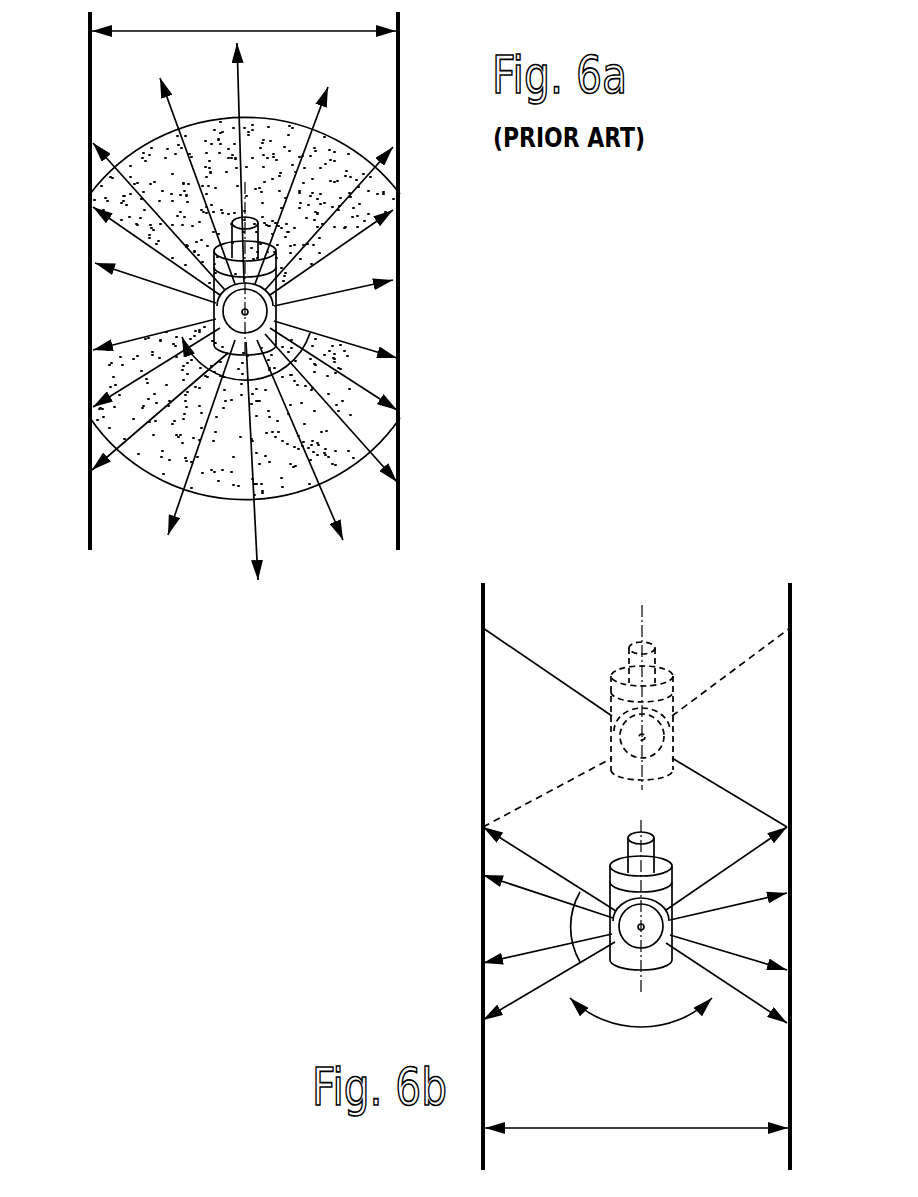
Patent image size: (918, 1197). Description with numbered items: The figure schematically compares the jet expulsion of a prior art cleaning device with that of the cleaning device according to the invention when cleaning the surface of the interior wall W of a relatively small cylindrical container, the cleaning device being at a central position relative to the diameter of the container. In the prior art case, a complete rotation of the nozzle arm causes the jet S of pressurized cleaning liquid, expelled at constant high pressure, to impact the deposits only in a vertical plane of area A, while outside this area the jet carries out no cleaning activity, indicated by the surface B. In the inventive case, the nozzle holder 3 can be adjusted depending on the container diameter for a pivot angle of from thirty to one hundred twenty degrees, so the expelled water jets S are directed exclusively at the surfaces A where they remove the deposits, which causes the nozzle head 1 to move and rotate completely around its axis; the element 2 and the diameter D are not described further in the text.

In FIG. 6A, the nozzle head 1 is at (212, 247).
In FIG. 6B, the nozzle head 1 is at (612, 870).
In FIG. 6A, the feed pipe 2 is at (253, 227).
In FIG. 6B, the feed pipe 2 is at (647, 860).
In FIG. 6A, the nozzle holder 3 is at (268, 312).
In FIG. 6B, the nozzle holder 3 is at (658, 907).
In FIG. 6A, the area A is at (112, 305).
In FIG. 6B, the area A is at (508, 930).
In FIG. 6A, the surface B is at (202, 137).
In FIG. 6A, the jet S is at (138, 378).
In FIG. 6B, the jet S is at (537, 953).
In FIG. 6A, the interior wall W is at (88, 527).
In FIG. 6B, the interior wall W is at (480, 730).
In FIG. 6A, the diameter D is at (244, 15).
In FIG. 6B, the diameter D is at (636, 1112).